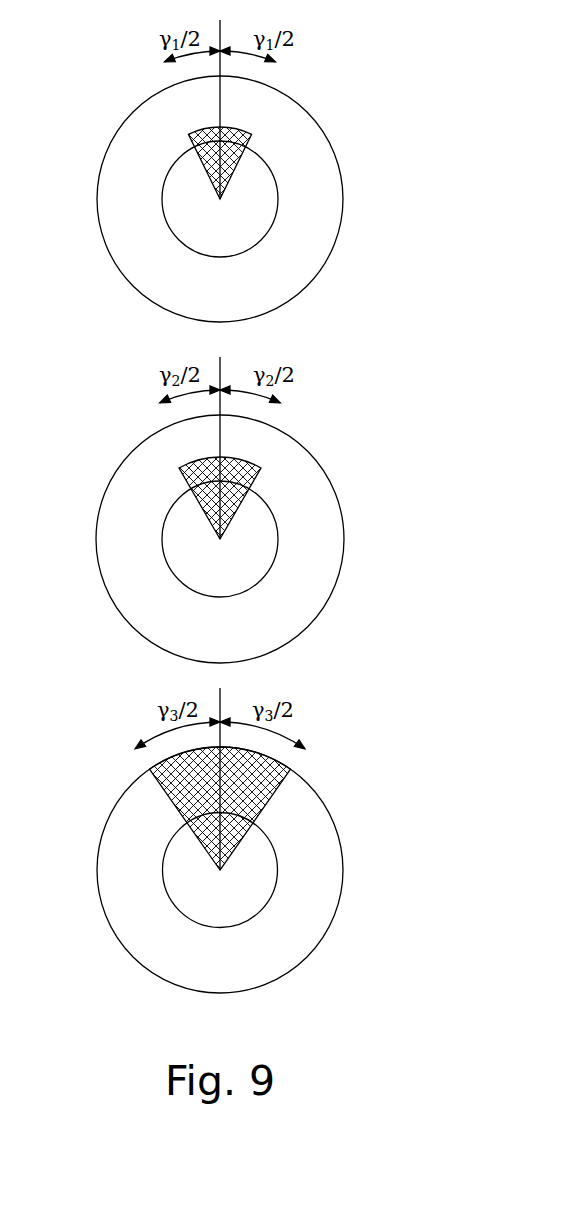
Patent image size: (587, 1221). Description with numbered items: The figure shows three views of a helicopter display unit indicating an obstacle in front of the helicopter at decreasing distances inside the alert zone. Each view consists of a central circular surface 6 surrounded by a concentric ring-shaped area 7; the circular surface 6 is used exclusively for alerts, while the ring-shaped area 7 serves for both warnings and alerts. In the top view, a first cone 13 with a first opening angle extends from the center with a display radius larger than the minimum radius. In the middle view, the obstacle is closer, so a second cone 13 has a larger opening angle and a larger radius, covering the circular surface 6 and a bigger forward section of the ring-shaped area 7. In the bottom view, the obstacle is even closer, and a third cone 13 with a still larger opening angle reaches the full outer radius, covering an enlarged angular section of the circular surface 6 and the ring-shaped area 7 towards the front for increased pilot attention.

The central circular surface 6 is at (187, 207).
The ring-shaped area 7 is at (325, 185).
The cone 13 is at (253, 138).